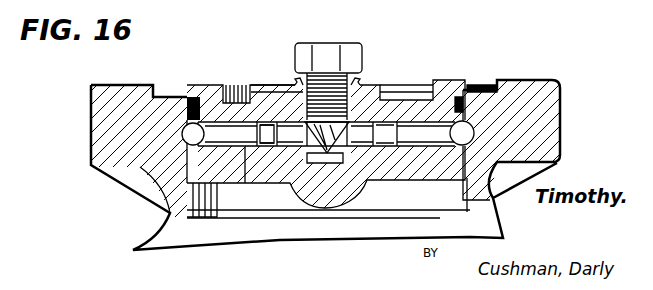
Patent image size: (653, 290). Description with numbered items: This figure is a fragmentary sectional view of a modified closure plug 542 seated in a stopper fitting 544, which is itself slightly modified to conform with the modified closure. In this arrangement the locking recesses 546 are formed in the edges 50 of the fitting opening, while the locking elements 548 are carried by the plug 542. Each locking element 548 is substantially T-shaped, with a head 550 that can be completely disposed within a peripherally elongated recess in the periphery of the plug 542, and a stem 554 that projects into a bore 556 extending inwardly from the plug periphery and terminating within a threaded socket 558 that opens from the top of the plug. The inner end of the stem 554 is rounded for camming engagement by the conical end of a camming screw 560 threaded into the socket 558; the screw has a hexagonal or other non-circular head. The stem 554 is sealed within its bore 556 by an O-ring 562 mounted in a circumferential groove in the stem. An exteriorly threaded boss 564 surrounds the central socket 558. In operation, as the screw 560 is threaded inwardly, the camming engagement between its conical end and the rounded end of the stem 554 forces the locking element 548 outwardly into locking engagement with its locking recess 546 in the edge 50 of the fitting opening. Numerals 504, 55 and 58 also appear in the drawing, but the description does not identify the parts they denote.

The stopper fitting 544 is at (561, 129).
The locking element 548 is at (427, 120).
The head 550 is at (196, 128).
The locking recess 546 is at (455, 140).
The closure plug 542 is at (248, 98).
The exteriorly threaded boss 564 is at (297, 89).
The threaded socket 558 is at (305, 84).
The camming screw 560 is at (359, 42).
The stem 554 is at (410, 120).
The seal 504 is at (478, 86).
The gasket 55 is at (480, 87).
The shoulder 58 is at (488, 88).
The edge of the fitting opening 50 is at (218, 205).
The bore 556 is at (245, 183).
The O-ring 562 is at (277, 146).